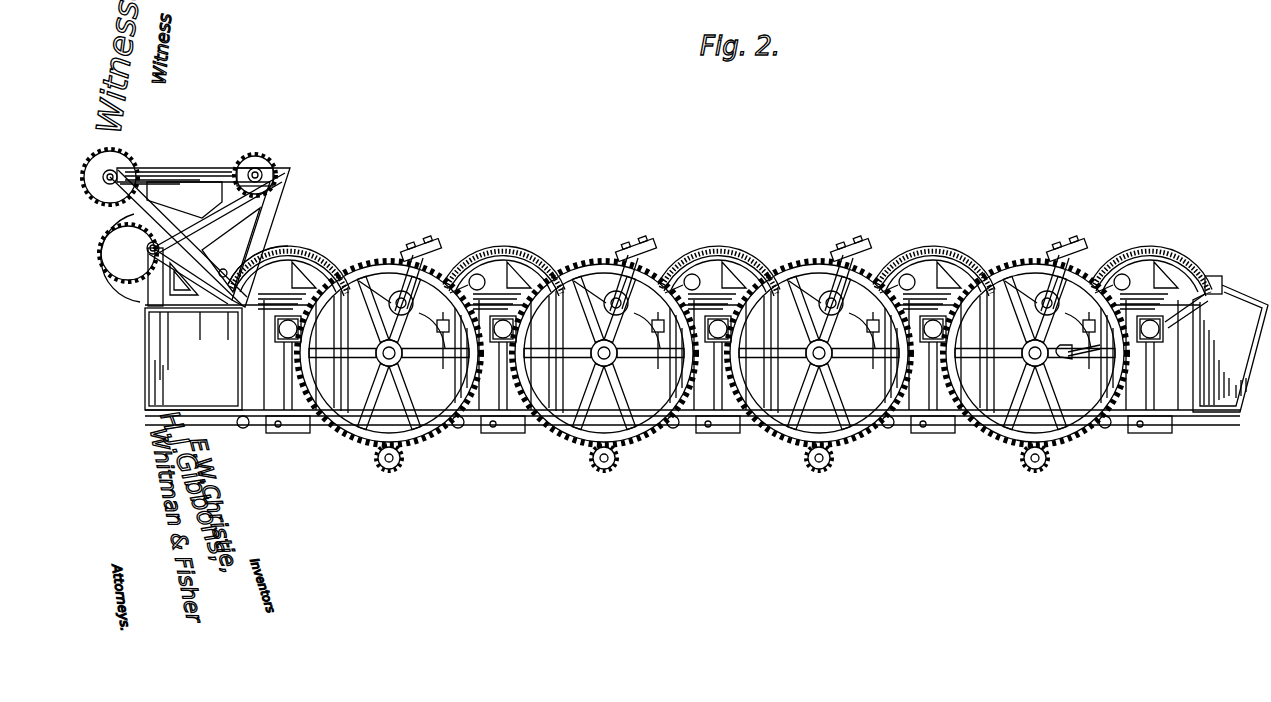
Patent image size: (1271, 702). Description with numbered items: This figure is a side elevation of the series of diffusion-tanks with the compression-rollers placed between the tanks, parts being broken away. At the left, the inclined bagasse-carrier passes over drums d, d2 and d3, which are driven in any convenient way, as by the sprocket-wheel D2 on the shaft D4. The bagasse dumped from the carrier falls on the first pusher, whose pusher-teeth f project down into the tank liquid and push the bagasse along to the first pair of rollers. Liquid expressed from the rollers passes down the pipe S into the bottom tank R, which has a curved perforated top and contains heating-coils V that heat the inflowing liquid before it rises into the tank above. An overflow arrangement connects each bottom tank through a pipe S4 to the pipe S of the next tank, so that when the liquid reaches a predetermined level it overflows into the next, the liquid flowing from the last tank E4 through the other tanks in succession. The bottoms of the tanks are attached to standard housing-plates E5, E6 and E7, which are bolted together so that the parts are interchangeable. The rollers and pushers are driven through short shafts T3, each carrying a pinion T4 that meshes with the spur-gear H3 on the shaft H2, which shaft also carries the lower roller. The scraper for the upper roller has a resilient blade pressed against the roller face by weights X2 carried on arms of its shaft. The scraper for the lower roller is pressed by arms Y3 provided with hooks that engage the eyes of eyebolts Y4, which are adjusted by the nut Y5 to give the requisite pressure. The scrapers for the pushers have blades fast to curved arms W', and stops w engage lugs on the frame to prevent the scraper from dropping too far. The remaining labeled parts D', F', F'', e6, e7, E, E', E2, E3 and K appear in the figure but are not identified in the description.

The drum d is at (118, 160).
The drum d2 is at (260, 156).
The drum d3 is at (134, 272).
The frame D' is at (200, 221).
The sprocket-wheel D2 is at (112, 258).
The shaft D4 is at (185, 215).
The curved arm W' is at (699, 250).
The stop w is at (350, 272).
The pusher-tooth f is at (292, 268).
The arched support F' is at (720, 339).
The bearing F'' is at (719, 361).
The weight X2 is at (476, 275).
The pipe S is at (365, 372).
The eccentric ring e6 is at (398, 298).
The post e7 is at (1230, 272).
The shaft H2 is at (418, 250).
The spur-gear H3 is at (850, 275).
The frame rail E is at (692, 377).
The housing-plate E5 is at (258, 384).
The housing-plate E6 is at (443, 360).
The housing-plate E7 is at (1216, 348).
The heating-coil V is at (345, 375).
The short shaft T3 is at (380, 463).
The pinion T4 is at (392, 462).
The pipe S4 is at (420, 438).
The bottom tank R is at (288, 434).
The frame section E' is at (470, 451).
The frame section E2 is at (700, 432).
The frame section E3 is at (918, 432).
The last tank E4 is at (1135, 432).
The arm Y3 is at (1075, 358).
The eyebolt Y4 is at (1140, 350).
The nut Y5 is at (1135, 338).
The hopper K is at (1240, 370).